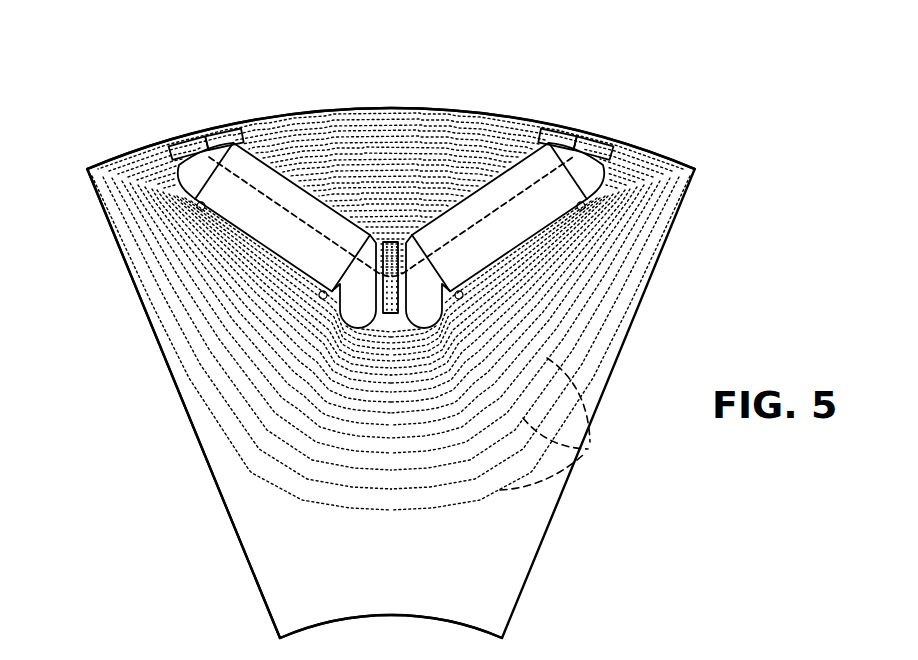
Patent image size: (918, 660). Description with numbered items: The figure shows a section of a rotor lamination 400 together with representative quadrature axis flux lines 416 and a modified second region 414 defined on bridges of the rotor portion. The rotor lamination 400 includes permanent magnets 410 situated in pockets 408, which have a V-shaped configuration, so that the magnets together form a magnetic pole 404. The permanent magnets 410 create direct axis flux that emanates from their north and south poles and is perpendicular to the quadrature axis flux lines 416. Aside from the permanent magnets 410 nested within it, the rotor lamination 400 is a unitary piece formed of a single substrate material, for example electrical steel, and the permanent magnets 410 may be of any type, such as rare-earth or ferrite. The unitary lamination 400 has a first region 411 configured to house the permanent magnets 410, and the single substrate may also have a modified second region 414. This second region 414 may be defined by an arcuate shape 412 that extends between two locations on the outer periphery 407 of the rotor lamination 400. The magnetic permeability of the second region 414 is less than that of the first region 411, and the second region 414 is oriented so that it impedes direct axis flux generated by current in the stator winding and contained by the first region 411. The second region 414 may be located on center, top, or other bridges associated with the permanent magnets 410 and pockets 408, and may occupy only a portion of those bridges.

The rotor lamination 400 is at (607, 62).
The magnetic pole 404 is at (427, 107).
The outer periphery 407 is at (87, 168).
The pockets 408 is at (177, 172).
The permanent magnets 410 is at (284, 186).
The first region 411 is at (287, 596).
The arcuate shape 412 is at (208, 166).
The second region 414 is at (392, 238).
The quadrature axis flux lines 416 is at (588, 449).